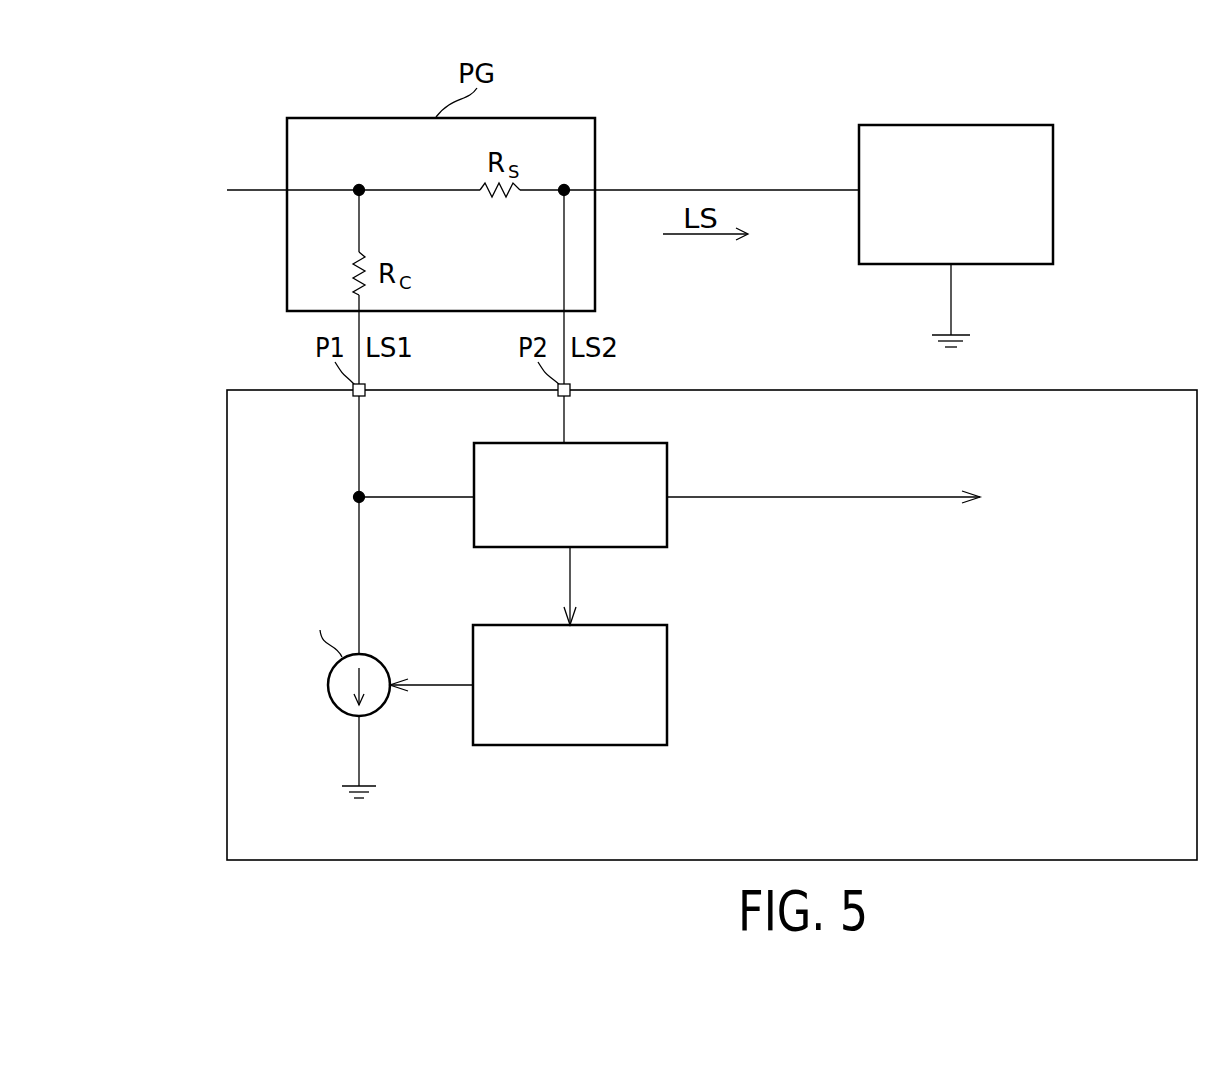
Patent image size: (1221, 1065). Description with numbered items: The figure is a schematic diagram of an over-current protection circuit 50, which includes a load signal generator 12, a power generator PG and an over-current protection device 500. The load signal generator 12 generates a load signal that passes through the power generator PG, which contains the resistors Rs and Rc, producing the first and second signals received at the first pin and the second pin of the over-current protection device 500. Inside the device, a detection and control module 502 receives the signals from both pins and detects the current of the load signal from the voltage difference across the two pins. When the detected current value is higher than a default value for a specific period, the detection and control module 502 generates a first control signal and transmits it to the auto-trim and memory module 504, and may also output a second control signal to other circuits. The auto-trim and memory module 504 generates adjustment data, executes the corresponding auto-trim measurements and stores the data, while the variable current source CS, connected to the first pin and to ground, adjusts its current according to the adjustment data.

The over-current protection circuit 50 is at (222, 96).
The load signal generator 12 is at (1060, 195).
The over-current protection device 500 is at (713, 584).
The detection and control module 502 is at (668, 472).
The auto-trim and memory module 504 is at (668, 678).